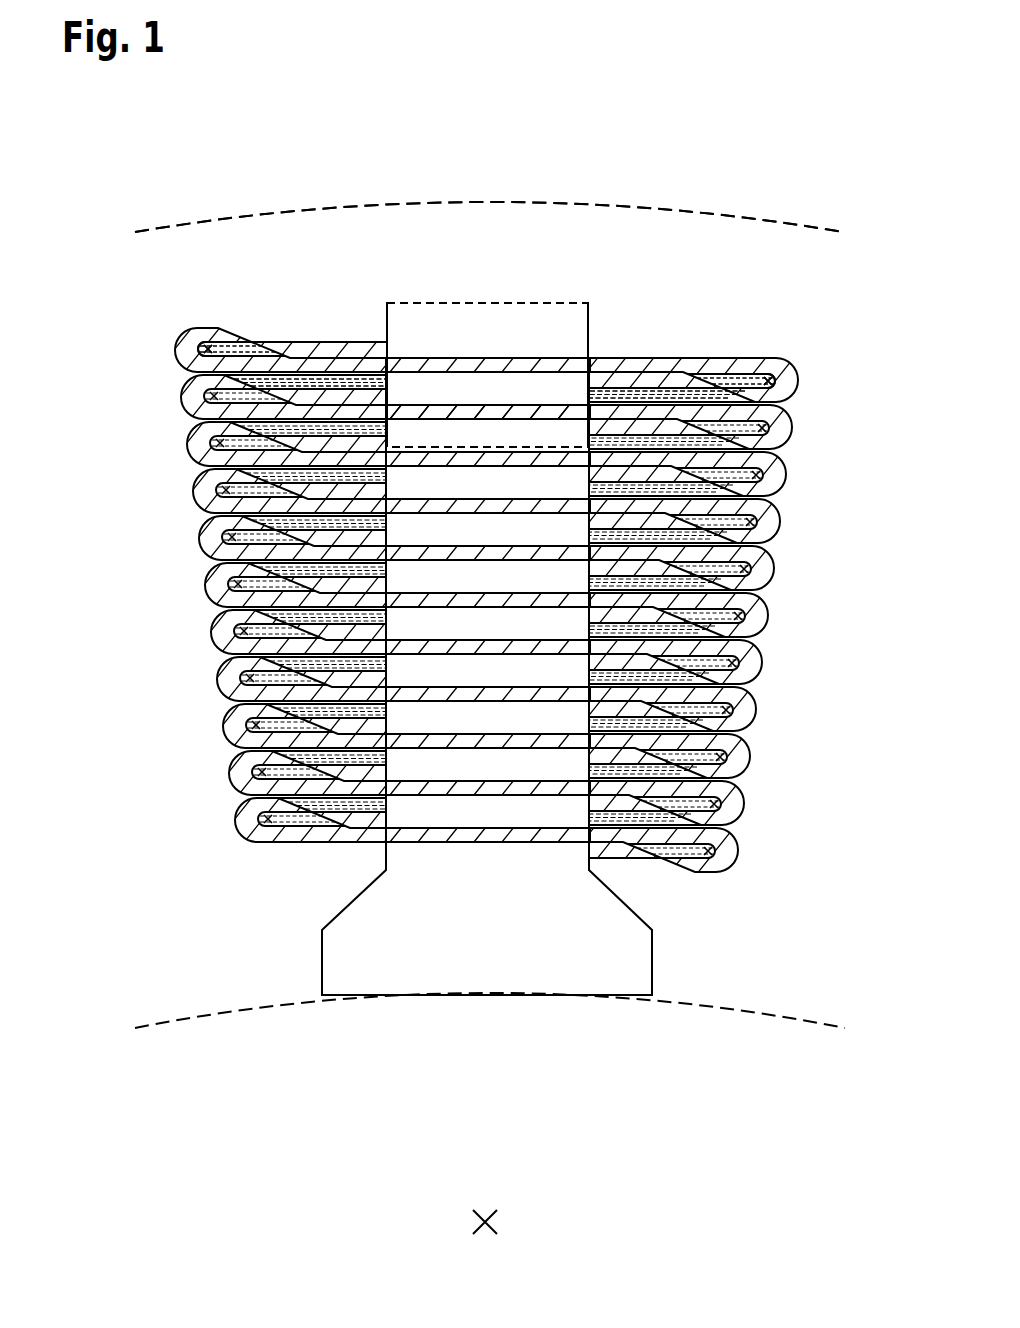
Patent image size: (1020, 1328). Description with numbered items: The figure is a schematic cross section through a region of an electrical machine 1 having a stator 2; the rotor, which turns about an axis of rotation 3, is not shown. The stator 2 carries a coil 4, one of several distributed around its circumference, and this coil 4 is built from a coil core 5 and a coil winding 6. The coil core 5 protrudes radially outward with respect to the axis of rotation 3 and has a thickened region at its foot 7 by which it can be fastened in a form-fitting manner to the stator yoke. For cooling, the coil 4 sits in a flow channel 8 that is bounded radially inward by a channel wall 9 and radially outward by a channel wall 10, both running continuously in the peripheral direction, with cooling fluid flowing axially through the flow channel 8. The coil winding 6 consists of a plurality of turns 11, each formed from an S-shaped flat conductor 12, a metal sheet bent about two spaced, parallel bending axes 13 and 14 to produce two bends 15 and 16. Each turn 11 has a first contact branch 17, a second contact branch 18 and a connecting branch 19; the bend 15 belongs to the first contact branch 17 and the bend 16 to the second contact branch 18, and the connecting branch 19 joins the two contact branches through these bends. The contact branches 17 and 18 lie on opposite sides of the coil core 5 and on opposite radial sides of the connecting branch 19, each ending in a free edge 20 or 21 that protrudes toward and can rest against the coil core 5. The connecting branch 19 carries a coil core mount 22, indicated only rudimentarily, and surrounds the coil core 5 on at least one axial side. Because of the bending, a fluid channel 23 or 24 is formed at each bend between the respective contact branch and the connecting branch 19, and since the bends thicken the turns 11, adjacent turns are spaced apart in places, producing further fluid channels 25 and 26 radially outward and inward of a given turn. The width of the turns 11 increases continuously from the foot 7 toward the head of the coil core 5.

The electrical machine 1 is at (672, 135).
The stator 2 is at (778, 177).
The axis of rotation 3 is at (498, 1218).
The coil 4 is at (303, 231).
The coil core 5 is at (326, 872).
The coil winding 6 is at (138, 311).
The foot 7 is at (498, 980).
The flow channel 8 is at (840, 624).
The channel wall 9 is at (190, 1022).
The channel wall 10 is at (513, 206).
The turn 11 is at (155, 351).
The flat conductor 12 is at (488, 412).
The bending axis 13 is at (205, 348).
The bending axis 14 is at (772, 382).
The bend 15 is at (183, 348).
The bend 16 is at (793, 387).
The first contact branch 17 is at (313, 345).
The second contact branch 18 is at (693, 380).
The connecting branch 19 is at (605, 365).
The free edge 20 is at (390, 348).
The free edge 21 is at (585, 387).
The coil core mount 22 is at (531, 386).
The fluid channel 23 is at (228, 352).
The fluid channel 24 is at (753, 382).
The fluid channel 25 is at (360, 383).
The fluid channel 26 is at (650, 388).